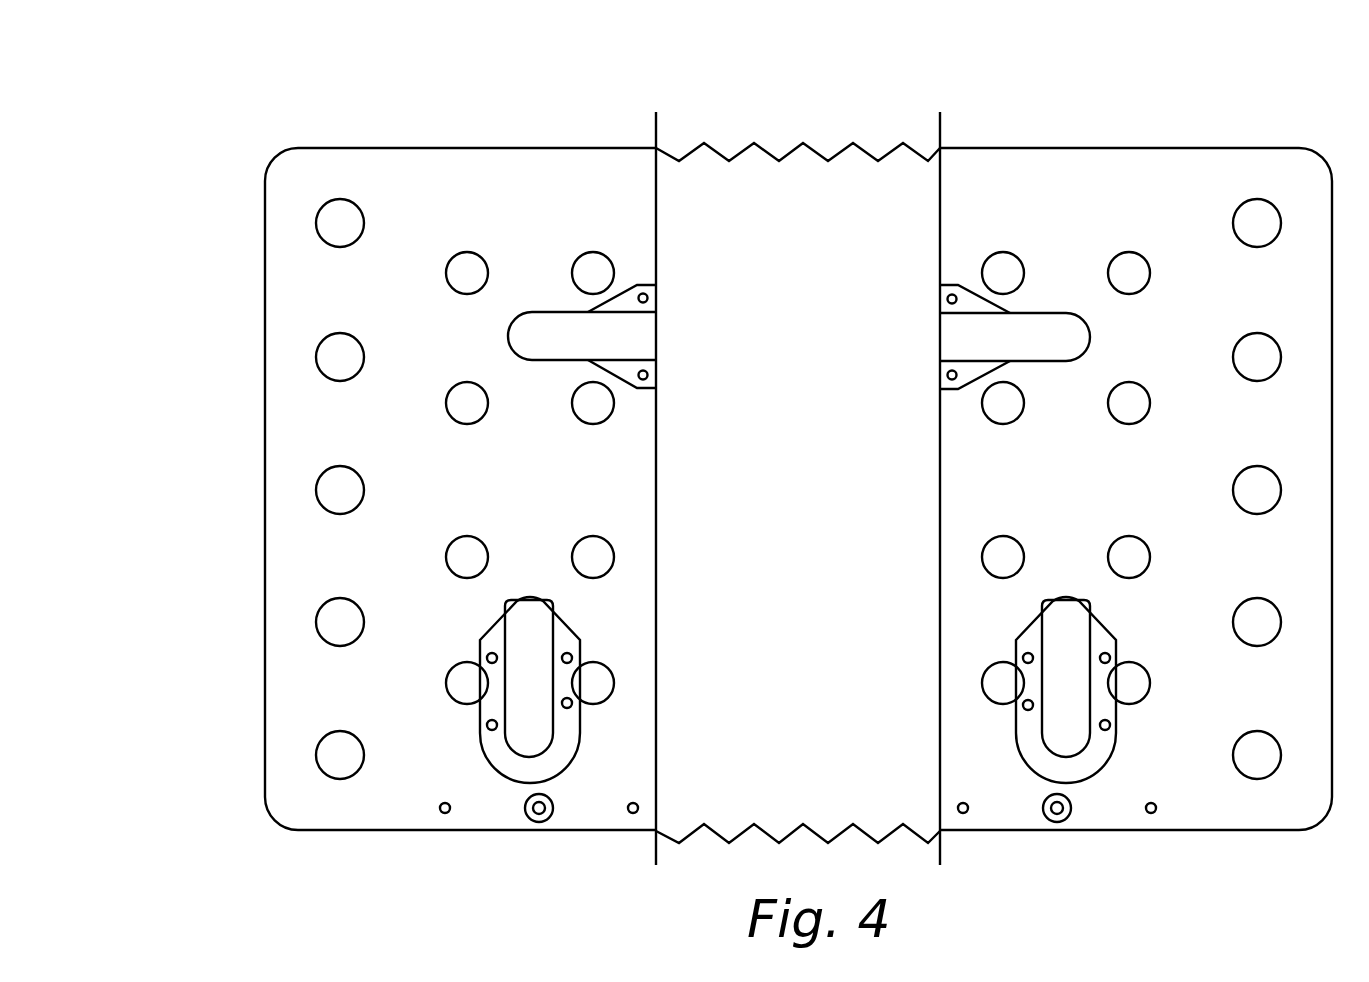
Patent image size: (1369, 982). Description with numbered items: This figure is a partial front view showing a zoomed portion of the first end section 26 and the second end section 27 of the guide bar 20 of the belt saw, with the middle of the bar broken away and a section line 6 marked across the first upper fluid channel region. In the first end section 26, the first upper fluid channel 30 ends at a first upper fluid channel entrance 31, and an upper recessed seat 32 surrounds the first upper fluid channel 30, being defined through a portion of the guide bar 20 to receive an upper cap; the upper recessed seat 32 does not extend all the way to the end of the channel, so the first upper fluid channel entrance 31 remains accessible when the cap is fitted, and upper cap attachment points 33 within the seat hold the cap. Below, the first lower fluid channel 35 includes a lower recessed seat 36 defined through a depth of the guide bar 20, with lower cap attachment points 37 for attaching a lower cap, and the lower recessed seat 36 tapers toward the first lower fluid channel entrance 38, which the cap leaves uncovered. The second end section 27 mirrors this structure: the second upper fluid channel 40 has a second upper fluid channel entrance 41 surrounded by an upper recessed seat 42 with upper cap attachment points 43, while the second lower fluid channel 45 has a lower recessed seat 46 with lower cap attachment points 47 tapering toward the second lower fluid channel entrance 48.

The guide bar 20 is at (265, 90).
The first end section 26 is at (470, 128).
The second end section 27 is at (1125, 130).
The first upper fluid channel 30 is at (640, 335).
The first upper fluid channel entrance 31 is at (508, 345).
The upper recessed seat 32 is at (630, 295).
The upper cap attachment points 33 is at (648, 298).
The first lower fluid channel 35 is at (512, 678).
The lower recessed seat 36 is at (555, 757).
The lower cap attachment points 37 is at (572, 657).
The first lower fluid channel entrance 38 is at (532, 602).
The second upper fluid channel 40 is at (945, 345).
The second upper fluid channel entrance 41 is at (1062, 335).
The upper recessed seat 42 is at (957, 283).
The upper cap attachment points 43 is at (948, 299).
The second lower fluid channel 45 is at (1040, 727).
The lower recessed seat 46 is at (1080, 765).
The lower cap attachment points 47 is at (1110, 658).
The second lower fluid channel entrance 48 is at (1067, 604).
The section line 6- 6 is at (1042, 72).